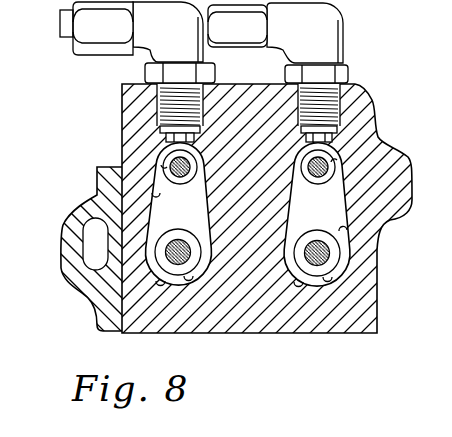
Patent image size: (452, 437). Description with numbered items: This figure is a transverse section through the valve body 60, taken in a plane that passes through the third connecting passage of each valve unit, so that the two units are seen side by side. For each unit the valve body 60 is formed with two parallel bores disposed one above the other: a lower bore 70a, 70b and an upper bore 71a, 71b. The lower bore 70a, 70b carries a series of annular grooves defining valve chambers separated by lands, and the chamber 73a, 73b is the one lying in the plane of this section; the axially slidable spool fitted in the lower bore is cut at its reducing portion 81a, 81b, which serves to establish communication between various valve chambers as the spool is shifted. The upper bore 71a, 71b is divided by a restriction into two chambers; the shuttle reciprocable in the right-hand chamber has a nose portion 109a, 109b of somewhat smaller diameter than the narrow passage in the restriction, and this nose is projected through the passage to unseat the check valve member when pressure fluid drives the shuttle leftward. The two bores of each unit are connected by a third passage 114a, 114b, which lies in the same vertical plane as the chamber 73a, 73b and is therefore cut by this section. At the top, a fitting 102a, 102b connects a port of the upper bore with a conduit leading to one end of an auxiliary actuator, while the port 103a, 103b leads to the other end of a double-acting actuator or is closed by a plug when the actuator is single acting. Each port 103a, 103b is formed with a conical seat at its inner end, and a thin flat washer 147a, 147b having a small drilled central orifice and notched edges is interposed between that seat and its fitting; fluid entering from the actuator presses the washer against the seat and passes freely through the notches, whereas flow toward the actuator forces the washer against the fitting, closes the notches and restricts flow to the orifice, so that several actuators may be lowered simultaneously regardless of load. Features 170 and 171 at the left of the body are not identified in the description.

The valve body 60 is at (252, 312).
The bore 70a is at (188, 280).
The bore 70b is at (328, 281).
The bore 71a is at (157, 164).
The bore 71b is at (329, 163).
The chamber 73a is at (160, 284).
The chamber 73b is at (298, 285).
The reducing portion 81a is at (183, 240).
The reducing portion 81b is at (313, 241).
The fitting 102a is at (173, 50).
The fitting 102b is at (322, 52).
The port 103a is at (164, 120).
The port 103b is at (340, 122).
The nose portion 109a is at (166, 166).
The nose portion 109b is at (335, 171).
The third passage 114a is at (130, 185).
The third passage 114b is at (348, 234).
The washer 147a is at (226, 128).
The washer 147b is at (328, 132).
The slot 170 is at (83, 250).
The mounting boss 171 is at (97, 285).